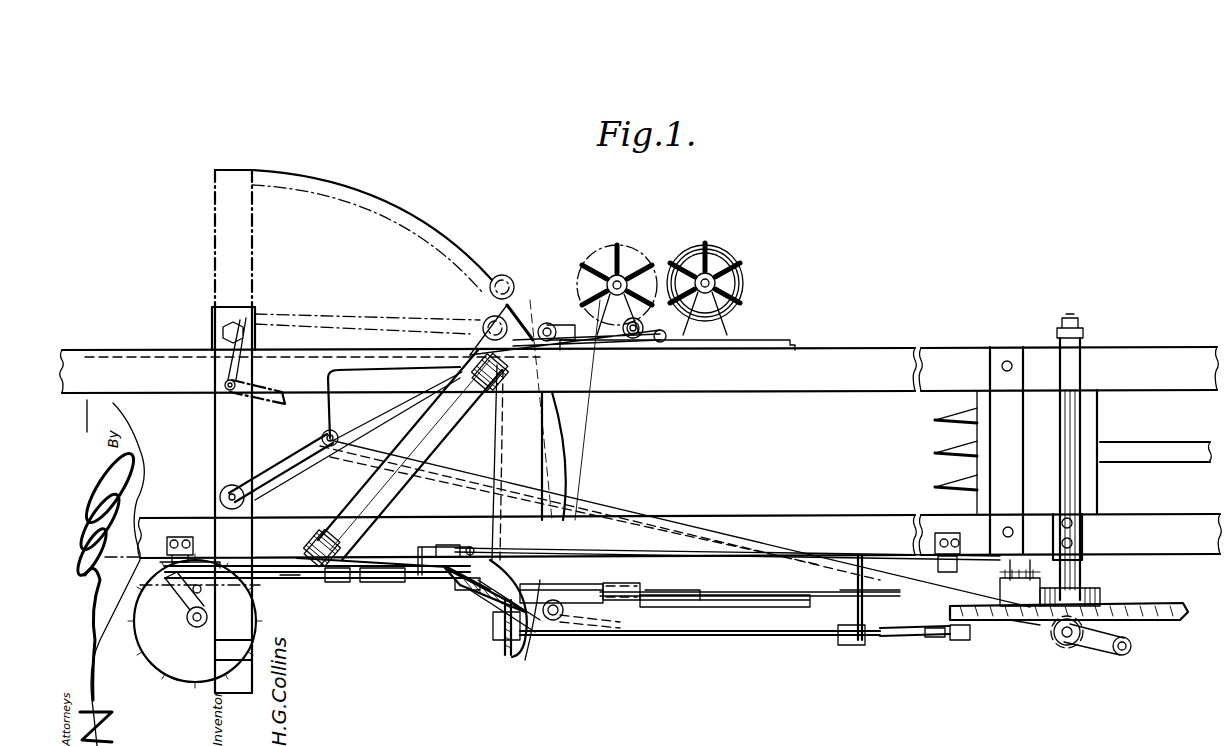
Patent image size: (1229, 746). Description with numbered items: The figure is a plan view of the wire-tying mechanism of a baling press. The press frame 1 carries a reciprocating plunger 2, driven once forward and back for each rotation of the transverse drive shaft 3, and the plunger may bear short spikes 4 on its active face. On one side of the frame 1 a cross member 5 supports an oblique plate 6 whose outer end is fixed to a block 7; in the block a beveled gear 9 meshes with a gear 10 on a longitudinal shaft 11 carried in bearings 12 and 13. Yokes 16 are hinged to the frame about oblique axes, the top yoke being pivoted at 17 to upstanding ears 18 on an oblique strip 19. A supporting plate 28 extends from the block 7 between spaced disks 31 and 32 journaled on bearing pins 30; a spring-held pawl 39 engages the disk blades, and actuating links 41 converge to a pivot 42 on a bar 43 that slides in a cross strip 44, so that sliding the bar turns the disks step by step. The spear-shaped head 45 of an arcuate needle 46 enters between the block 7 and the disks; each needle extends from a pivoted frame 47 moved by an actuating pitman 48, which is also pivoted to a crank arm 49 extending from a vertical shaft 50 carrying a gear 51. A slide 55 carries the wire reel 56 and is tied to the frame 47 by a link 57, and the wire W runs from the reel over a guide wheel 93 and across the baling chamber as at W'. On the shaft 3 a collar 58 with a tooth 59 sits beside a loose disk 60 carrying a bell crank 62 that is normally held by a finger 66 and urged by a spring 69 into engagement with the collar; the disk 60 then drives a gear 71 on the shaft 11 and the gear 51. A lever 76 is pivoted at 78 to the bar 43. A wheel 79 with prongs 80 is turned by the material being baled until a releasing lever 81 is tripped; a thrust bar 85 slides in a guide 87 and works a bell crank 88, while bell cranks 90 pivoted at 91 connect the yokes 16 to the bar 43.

The frame 1 is at (855, 360).
The reciprocating plunger 2 is at (1093, 425).
The transverse drive shaft 3 is at (1075, 330).
The spikes 4 is at (945, 418).
The cross member 5 is at (420, 583).
The plate 6 is at (468, 580).
The block 7 is at (485, 602).
The beveled gear 9 is at (482, 598).
The gear 10 is at (508, 655).
The longitudinal shaft 11 is at (713, 636).
The bearing 12 is at (852, 628).
The bearing 13 is at (495, 642).
The yokes 16 is at (509, 444).
The pivot 17 is at (478, 385).
The upstanding ears 18 is at (314, 530).
The strip 19 is at (402, 468).
The supporting plate 28 is at (652, 592).
The bearing pins 30 is at (620, 588).
The disk 31 is at (595, 598).
The disk 32 is at (598, 588).
The pawl 39 is at (635, 570).
The actuating link 41 is at (750, 620).
The pivot 42 is at (812, 612).
The bar 43 is at (752, 595).
The cross strip 44 is at (845, 598).
The spear-shaped head 45 is at (535, 646).
The arcuate needle 46 is at (575, 483).
The frame 47 is at (290, 441).
The actuating pitman 48 is at (905, 632).
The lever 49 is at (1100, 655).
The vertical shaft 50 is at (1065, 646).
The gear 51 is at (1055, 632).
The slide 55 is at (752, 343).
The reel 56 is at (738, 262).
The link 57 is at (605, 342).
The collar 58 is at (1080, 592).
The tooth 59 is at (1030, 613).
The disk 60 is at (1180, 606).
The bell crank 62 is at (1010, 565).
The finger 66 is at (960, 562).
The spring 69 is at (1040, 555).
The gear 71 is at (958, 640).
The lever 76 is at (938, 637).
The pivot 78 is at (862, 619).
The wheel 79 is at (215, 632).
The prongs 80 is at (120, 667).
The releasing lever 81 is at (170, 578).
The thrust bar 85 is at (325, 583).
The guide 87 is at (350, 584).
The bell crank 88 is at (392, 578).
The bell cranks 90 is at (650, 610).
The pivot 91 is at (533, 545).
The guide wheel 93 is at (548, 323).
The wire W is at (586, 456).
The wire portion W' is at (575, 373).